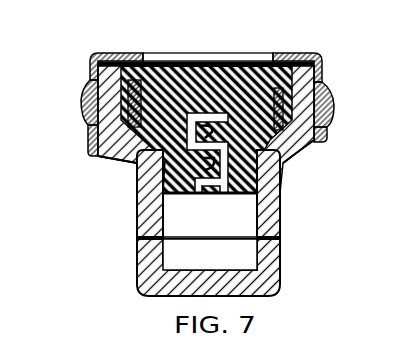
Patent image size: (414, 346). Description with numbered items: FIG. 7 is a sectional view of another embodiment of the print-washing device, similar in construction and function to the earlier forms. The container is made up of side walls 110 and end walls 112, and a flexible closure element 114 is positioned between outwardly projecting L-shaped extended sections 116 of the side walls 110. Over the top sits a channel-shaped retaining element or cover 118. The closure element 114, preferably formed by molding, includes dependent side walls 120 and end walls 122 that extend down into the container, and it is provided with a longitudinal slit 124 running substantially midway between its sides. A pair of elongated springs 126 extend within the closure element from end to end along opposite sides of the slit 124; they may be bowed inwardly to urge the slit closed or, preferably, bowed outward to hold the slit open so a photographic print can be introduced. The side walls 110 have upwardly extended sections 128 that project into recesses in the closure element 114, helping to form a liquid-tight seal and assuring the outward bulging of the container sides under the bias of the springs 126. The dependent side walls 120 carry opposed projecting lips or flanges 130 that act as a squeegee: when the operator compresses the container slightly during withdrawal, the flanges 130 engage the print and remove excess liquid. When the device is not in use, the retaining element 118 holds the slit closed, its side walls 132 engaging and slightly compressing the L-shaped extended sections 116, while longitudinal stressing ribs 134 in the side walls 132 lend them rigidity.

The side walls 110 is at (212, 260).
The end walls 112 is at (217, 257).
The flexible closure element 114 is at (173, 66).
The L-shaped extended sections 116 is at (113, 152).
The channel-shaped retaining element or cover 118 is at (205, 88).
The dependent side walls 120 is at (164, 200).
The end walls 122 is at (210, 187).
The longitudinal slit 124 is at (221, 74).
The elongated springs 126 is at (99, 128).
The upwardly extended sections 128 is at (163, 61).
The projecting lips or flanges 130 is at (196, 189).
The side walls of retaining element 132 is at (90, 62).
The longitudinal stressing ribs 134 is at (84, 100).